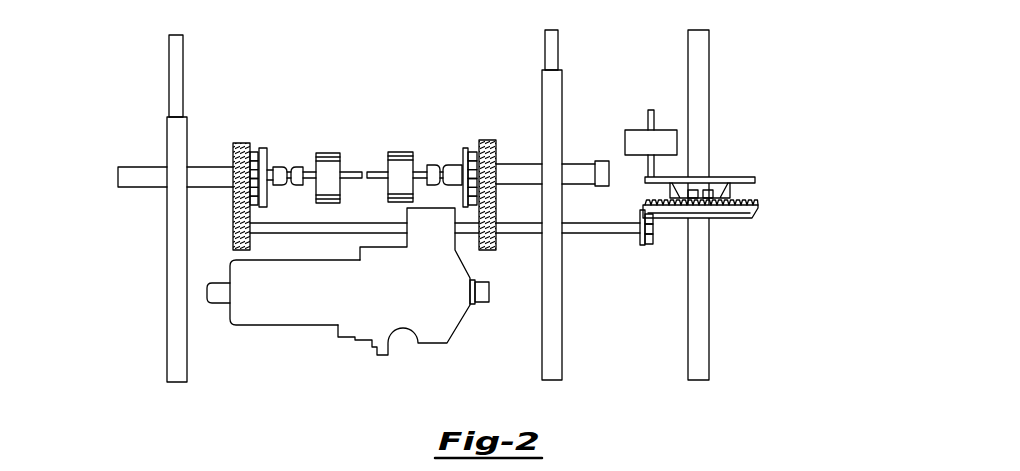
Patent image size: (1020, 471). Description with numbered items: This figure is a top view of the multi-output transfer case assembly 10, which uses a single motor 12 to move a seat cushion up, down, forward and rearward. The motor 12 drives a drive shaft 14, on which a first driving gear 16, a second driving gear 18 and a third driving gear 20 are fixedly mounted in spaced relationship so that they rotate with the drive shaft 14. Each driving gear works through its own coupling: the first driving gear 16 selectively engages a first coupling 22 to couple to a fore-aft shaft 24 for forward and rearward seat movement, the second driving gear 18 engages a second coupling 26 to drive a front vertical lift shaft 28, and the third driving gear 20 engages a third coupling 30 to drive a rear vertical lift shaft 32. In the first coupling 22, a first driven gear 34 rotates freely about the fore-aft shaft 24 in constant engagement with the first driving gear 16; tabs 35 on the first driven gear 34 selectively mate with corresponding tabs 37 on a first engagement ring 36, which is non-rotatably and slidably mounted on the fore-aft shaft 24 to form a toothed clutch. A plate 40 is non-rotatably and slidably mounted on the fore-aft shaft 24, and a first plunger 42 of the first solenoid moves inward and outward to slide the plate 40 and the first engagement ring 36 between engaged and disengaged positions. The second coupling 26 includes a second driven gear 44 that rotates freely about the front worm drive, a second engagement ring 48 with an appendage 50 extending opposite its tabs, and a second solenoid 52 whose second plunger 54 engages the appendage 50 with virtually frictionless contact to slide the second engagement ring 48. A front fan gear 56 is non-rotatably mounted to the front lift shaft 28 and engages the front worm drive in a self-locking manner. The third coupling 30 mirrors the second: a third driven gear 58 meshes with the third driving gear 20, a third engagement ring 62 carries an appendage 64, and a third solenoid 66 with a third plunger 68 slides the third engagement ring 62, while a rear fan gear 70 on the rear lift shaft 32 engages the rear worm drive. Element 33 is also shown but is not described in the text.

The transfer case assembly 10 is at (767, 92).
The motor 12 is at (310, 326).
The drive shaft 14 is at (364, 233).
The first driving gear 16 is at (643, 248).
The second driving gear 18 is at (488, 252).
The third driving gear 20 is at (236, 232).
The first coupling 22 is at (770, 187).
The fore-aft shaft 24 is at (709, 360).
The second coupling 26 is at (481, 88).
The front vertical lift shaft 28 is at (563, 340).
The third coupling 30 is at (255, 95).
The rear vertical lift shaft 32 is at (188, 351).
The sensor 33 is at (668, 128).
The first driven gear 34 is at (753, 218).
The tabs 35 is at (760, 202).
The first engagement ring 36 is at (680, 193).
The tabs 37 is at (735, 177).
The plate 40 is at (732, 177).
The first plunger 42 is at (650, 168).
The second driven gear 44 is at (488, 138).
The second engagement ring 48 is at (466, 147).
The appendage 50 is at (452, 163).
The second solenoid 52 is at (390, 150).
The second plunger 54 is at (432, 164).
The front fan gear 56 is at (527, 162).
The third driven gear 58 is at (240, 142).
The third engagement ring 62 is at (263, 146).
The appendage 64 is at (280, 166).
The third solenoid 66 is at (329, 151).
The third plunger 68 is at (299, 166).
The rear fan gear 70 is at (138, 166).